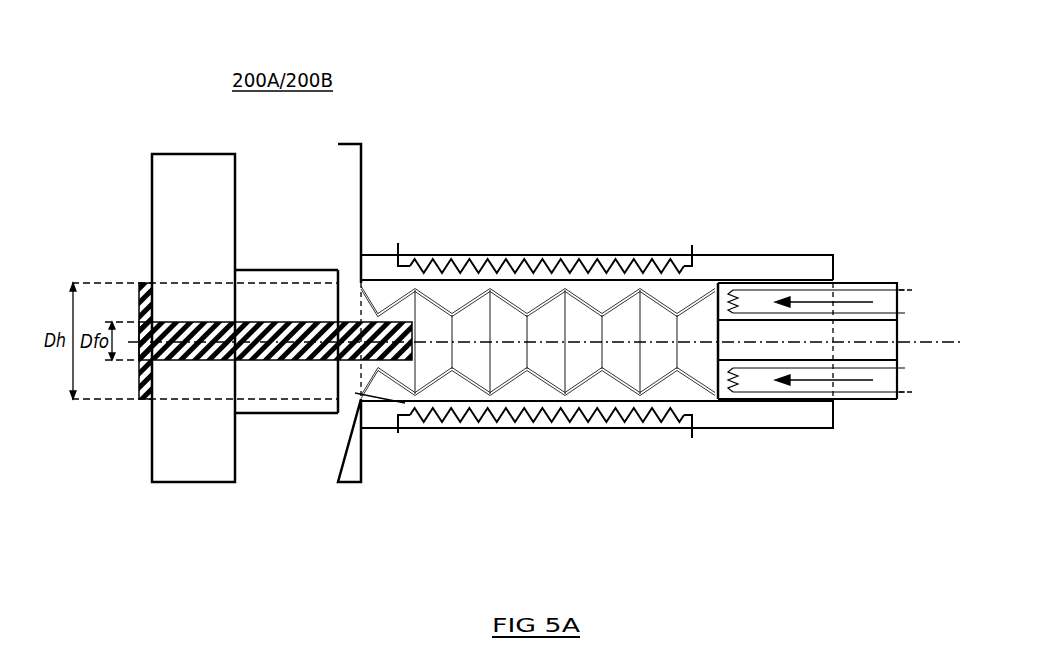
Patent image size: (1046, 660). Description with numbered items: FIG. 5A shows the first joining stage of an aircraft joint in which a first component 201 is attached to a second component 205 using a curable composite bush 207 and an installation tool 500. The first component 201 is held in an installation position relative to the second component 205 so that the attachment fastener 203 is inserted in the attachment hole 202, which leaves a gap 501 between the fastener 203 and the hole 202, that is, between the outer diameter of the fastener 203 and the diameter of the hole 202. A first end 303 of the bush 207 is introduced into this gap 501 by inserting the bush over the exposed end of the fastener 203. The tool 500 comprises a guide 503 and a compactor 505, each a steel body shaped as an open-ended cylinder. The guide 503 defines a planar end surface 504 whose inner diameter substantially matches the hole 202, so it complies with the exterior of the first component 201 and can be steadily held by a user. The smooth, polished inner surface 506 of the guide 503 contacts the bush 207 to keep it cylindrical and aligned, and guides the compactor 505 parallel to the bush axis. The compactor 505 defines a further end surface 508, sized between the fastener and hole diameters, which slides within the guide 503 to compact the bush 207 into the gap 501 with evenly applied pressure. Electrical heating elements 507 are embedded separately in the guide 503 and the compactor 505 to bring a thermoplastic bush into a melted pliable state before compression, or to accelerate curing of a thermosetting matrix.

The first component 201 is at (347, 153).
The attachment hole 202 is at (353, 393).
The attachment fastener 203 is at (141, 392).
The second component 205 is at (178, 482).
The curable composite bush 207 is at (565, 394).
The first end 303 is at (342, 288).
The tool 500 is at (762, 452).
The gap 501 is at (420, 410).
The guide 503 is at (527, 275).
The end surface 504 is at (363, 257).
The compactor 505 is at (798, 287).
The inner surface 506 is at (618, 280).
The electrical heating element 507 is at (458, 263).
The further end surface 508 is at (722, 400).